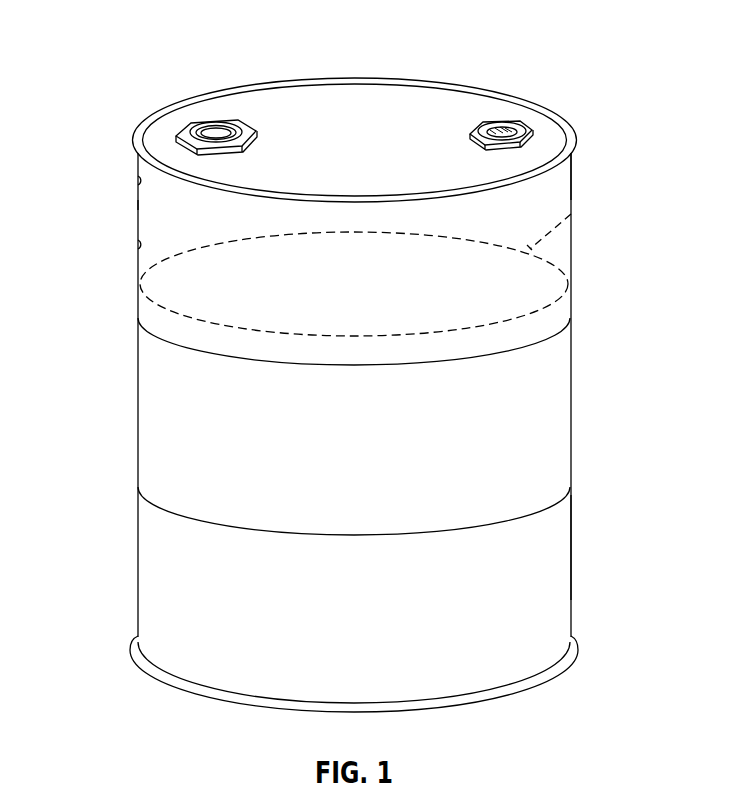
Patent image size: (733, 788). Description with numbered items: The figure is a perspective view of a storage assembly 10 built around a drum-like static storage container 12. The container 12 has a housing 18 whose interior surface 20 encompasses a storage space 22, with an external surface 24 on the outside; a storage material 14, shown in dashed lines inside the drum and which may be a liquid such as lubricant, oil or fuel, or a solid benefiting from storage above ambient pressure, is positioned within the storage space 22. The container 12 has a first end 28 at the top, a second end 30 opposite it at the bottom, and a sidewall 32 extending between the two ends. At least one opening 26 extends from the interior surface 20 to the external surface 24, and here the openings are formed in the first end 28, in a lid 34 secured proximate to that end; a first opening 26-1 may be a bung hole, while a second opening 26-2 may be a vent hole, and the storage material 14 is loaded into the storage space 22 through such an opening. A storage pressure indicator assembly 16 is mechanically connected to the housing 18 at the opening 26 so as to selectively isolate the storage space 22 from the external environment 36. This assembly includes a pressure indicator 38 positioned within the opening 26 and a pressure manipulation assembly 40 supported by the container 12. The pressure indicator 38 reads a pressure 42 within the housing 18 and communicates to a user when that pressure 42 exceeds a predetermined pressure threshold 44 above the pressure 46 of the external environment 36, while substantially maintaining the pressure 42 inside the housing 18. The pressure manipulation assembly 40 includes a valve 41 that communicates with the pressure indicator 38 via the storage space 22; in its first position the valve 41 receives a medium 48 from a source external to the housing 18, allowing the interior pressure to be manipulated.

The storage assembly 10 is at (480, 78).
The static storage container 12 is at (572, 378).
The storage material 14 is at (575, 213).
The storage pressure indicator assembly 16 is at (226, 114).
The housing 18 is at (572, 168).
The interior surface 20 is at (138, 186).
The storage space 22 is at (138, 245).
The external surface 24 is at (138, 424).
The opening 26 is at (183, 119).
The first opening 26-1 is at (168, 137).
The second opening 26-2 is at (534, 135).
The first end 28 is at (402, 100).
The second end 30 is at (460, 707).
The sidewall 32 is at (570, 450).
The lid 34 is at (340, 103).
The external environment 36 is at (588, 502).
The pressure indicator 38 is at (218, 121).
The pressure manipulation assembly 40 is at (522, 118).
The valve 41 is at (502, 126).
The pressure 42 is at (560, 193).
The predetermined pressure threshold 44 is at (163, 202).
The pressure 46 is at (147, 32).
The medium 48 is at (560, 241).